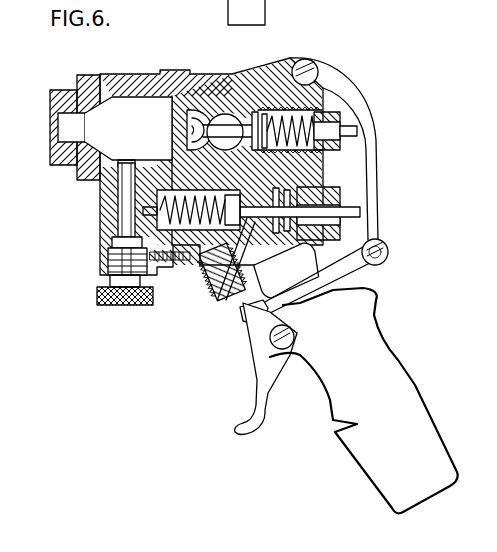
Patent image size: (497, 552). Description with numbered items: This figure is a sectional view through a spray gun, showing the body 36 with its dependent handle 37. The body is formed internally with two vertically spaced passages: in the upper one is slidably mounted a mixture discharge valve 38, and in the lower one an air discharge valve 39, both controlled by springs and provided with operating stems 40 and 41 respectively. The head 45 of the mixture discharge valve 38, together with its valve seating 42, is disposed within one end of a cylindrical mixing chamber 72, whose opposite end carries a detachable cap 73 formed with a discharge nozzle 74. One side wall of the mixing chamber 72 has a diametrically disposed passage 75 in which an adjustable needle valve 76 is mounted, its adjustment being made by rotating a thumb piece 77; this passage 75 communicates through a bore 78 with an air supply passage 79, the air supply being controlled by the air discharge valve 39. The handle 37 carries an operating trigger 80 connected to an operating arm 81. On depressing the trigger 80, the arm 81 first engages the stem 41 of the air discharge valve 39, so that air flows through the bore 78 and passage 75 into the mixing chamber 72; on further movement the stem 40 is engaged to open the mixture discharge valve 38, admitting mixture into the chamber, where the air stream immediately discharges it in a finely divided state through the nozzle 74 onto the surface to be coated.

The body 36 is at (128, 88).
The handle 37 is at (364, 400).
The mixture discharge valve 38 is at (221, 126).
The air discharge valve 39 is at (257, 200).
The operating stem 40 is at (347, 131).
The operating stem 41 is at (357, 212).
The valve seating 42 is at (211, 112).
The valve head 45 is at (187, 128).
The mixing chamber 72 is at (128, 128).
The detachable cap 73 is at (85, 78).
The discharge nozzle 74 is at (52, 128).
The passage 75 is at (100, 205).
The adjustable needle valve 76 is at (120, 257).
The thumb piece 77 is at (97, 297).
The bore 78 is at (150, 154).
The air supply passage 79 is at (208, 290).
The operating trigger 80 is at (262, 400).
The operating arm 81 is at (374, 162).